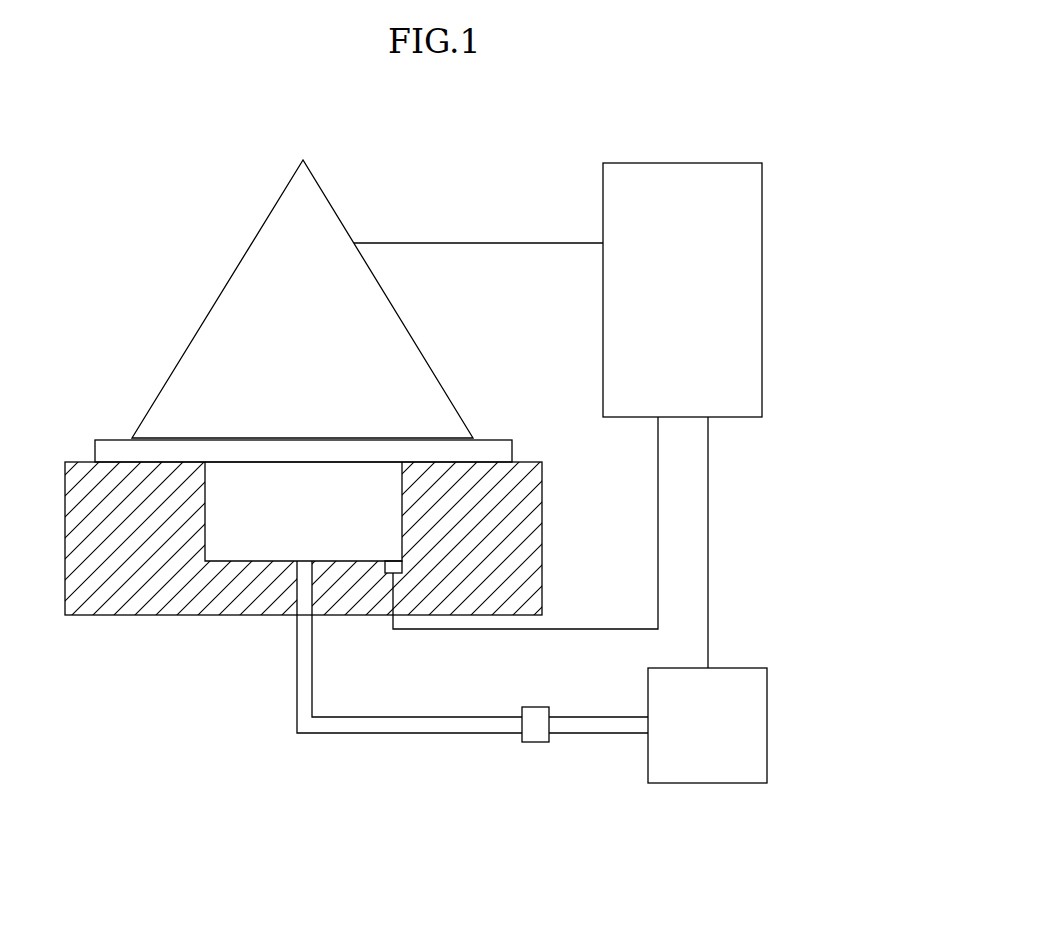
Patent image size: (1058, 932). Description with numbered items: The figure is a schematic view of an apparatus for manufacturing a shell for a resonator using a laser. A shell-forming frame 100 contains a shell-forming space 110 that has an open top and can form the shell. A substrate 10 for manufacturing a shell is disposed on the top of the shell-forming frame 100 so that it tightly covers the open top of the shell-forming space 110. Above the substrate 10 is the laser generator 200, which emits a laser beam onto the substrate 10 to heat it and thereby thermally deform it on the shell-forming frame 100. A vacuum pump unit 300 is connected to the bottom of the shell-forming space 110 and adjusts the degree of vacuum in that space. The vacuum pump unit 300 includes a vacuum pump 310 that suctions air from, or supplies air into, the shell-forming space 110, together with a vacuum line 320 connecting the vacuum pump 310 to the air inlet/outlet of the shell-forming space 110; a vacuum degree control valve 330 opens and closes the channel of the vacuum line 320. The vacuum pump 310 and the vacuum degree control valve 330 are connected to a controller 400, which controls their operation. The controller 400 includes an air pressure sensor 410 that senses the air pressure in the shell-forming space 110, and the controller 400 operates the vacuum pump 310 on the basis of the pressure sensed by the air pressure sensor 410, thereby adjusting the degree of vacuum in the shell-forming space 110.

The substrate for manufacturing a shell 10 is at (115, 440).
The shell-forming frame 100 is at (122, 590).
The shell-forming space 110 is at (242, 528).
The laser generator 200 is at (259, 232).
The vacuum pump unit 300 is at (539, 733).
The vacuum pump 310 is at (728, 796).
The vacuum line 320 is at (400, 735).
The vacuum degree control valve 330 is at (538, 742).
The controller 400 is at (703, 163).
The air pressure sensor 410 is at (398, 568).